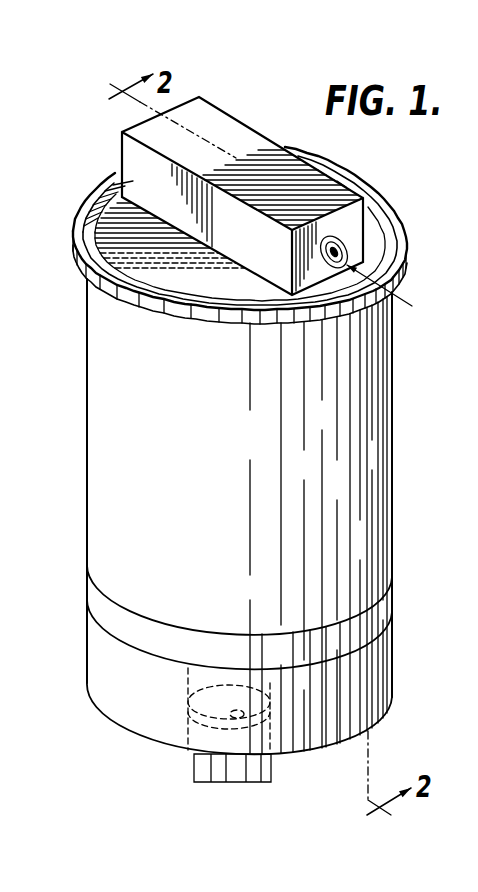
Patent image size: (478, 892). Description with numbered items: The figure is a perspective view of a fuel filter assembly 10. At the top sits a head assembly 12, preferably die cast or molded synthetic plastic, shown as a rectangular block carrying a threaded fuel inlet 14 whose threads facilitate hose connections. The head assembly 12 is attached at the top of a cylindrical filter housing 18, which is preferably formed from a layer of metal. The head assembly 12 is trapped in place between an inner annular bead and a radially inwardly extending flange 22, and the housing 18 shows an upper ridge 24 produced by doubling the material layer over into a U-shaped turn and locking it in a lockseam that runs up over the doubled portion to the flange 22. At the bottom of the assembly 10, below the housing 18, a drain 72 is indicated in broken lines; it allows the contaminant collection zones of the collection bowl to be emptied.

The filter assembly 10 is at (57, 403).
The head assembly 12 is at (244, 120).
The fuel inlet 14 is at (318, 260).
The filter housing 18 is at (395, 413).
The radially inwardly extending flange 22 is at (98, 216).
The upper ridge 24 is at (386, 178).
The drain 72 is at (266, 781).